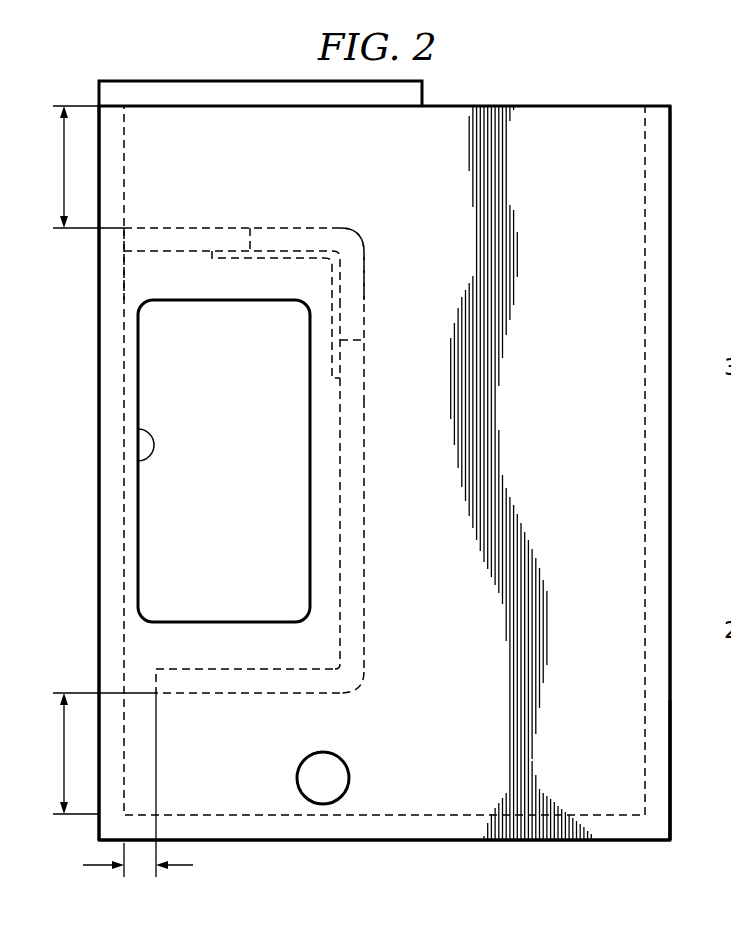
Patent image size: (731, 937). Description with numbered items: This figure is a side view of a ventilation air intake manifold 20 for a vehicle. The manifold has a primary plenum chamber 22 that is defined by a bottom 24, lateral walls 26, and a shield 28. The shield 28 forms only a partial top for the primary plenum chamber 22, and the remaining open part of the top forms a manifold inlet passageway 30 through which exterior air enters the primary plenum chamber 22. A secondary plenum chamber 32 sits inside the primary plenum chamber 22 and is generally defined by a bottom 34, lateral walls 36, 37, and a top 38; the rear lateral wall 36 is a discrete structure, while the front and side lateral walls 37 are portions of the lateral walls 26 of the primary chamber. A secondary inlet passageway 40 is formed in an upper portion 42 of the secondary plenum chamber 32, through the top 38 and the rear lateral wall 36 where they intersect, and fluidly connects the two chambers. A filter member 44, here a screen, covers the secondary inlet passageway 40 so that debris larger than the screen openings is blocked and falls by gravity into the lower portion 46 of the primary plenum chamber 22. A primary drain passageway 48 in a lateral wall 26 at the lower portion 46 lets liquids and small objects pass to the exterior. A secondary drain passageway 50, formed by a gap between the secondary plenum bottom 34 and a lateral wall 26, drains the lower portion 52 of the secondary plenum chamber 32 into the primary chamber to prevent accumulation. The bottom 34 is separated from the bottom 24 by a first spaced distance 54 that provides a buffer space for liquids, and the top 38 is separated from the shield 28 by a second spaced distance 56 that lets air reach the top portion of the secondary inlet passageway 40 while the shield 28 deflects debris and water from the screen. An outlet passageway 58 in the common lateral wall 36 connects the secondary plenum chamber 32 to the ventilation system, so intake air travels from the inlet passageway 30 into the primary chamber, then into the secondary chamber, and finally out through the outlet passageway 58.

The ventilation air intake manifold 20 is at (170, 62).
The primary plenum chamber 22 is at (592, 522).
The bottom 24 is at (250, 842).
The lateral walls 26 is at (672, 297).
The shield 28 is at (258, 81).
The manifold inlet passageway 30 is at (536, 100).
The secondary plenum chamber 32 is at (185, 512).
The bottom 34 is at (238, 693).
The lateral wall 36 is at (368, 440).
The lateral walls 37 is at (127, 272).
The top 38 is at (196, 228).
The secondary inlet passageway 40 is at (356, 239).
The upper portion 42 is at (378, 274).
The filter member 44 is at (324, 346).
The lower portion 46 is at (676, 775).
The primary drain passageway 48 is at (352, 774).
The secondary drain passageway 50 is at (123, 785).
The lower portion 52 is at (376, 648).
The first spaced distance 54 is at (103, 753).
The second spaced distance 56 is at (87, 167).
The outlet passageway 58 is at (138, 430).